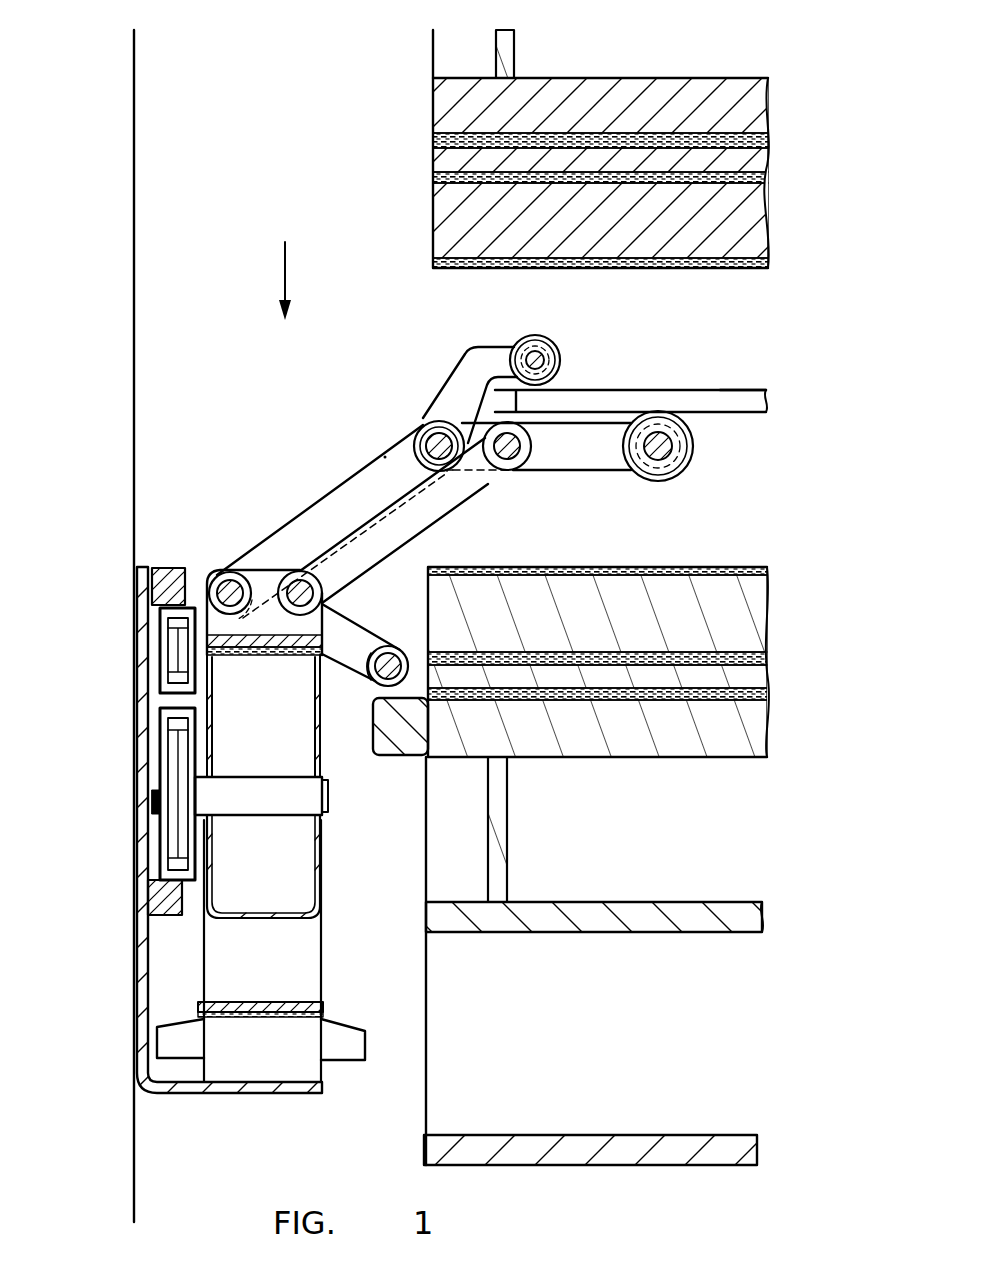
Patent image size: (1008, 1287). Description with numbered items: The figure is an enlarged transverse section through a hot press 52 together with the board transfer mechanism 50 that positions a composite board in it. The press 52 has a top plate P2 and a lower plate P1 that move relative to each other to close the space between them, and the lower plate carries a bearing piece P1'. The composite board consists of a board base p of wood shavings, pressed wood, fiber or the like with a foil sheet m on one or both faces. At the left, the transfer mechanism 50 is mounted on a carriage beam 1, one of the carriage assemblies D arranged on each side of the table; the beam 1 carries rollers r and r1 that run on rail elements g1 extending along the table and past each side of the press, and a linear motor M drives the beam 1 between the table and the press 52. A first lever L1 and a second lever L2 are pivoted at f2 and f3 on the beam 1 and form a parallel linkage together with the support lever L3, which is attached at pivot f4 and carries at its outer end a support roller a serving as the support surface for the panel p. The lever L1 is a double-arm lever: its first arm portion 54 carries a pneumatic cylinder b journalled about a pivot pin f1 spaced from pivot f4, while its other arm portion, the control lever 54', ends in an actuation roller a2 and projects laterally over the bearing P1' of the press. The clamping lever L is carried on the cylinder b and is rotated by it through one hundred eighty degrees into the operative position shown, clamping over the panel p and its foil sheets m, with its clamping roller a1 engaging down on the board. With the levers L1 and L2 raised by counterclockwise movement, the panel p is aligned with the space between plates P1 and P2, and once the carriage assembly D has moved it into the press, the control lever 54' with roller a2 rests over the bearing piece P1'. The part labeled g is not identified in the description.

The top plate P2 is at (602, 225).
The hot press 52 is at (416, 128).
The carriage assembly D is at (284, 264).
The clamping lever L is at (470, 372).
The pneumatic cylinder b is at (427, 422).
The second lever L2 is at (395, 530).
The first lever L1 is at (335, 520).
The first arm portion 54 is at (361, 482).
The board transfer mechanism 50 is at (230, 542).
The clamping roller a1 is at (535, 335).
The support roller a is at (658, 410).
The board base p is at (708, 402).
The foil sheet m is at (762, 408).
The pivot pin f1 is at (451, 473).
The pivot of lever L3 f4 is at (507, 472).
The support lever L3 is at (597, 448).
The rail element g1 is at (163, 903).
The roller r1 is at (178, 657).
The roller r is at (178, 748).
The guide bracket g is at (147, 997).
The pivot f2 is at (230, 614).
The pivot f3 is at (300, 616).
The control lever 54' is at (361, 669).
The actuation roller a2 is at (390, 645).
The carriage beam 1 is at (321, 858).
The bearing piece P1' is at (400, 770).
The lower plate P1 is at (598, 704).
The linear motor M is at (259, 1053).